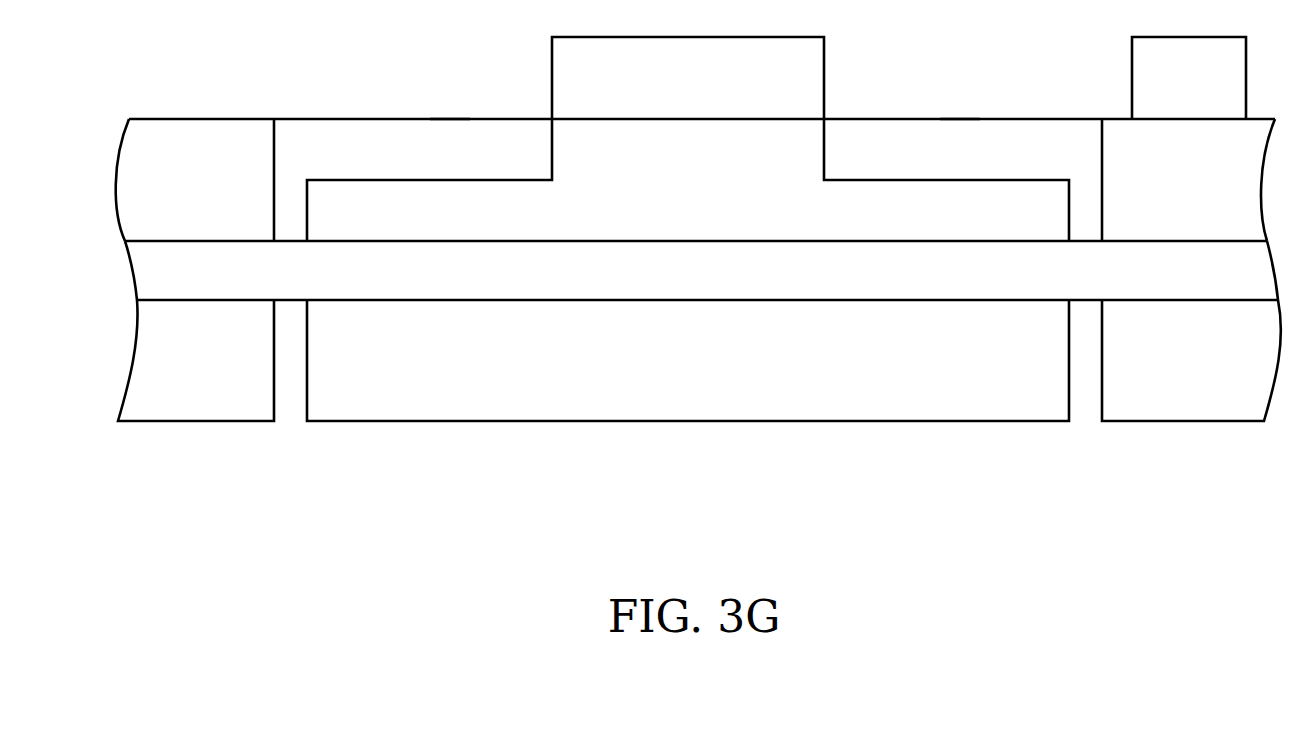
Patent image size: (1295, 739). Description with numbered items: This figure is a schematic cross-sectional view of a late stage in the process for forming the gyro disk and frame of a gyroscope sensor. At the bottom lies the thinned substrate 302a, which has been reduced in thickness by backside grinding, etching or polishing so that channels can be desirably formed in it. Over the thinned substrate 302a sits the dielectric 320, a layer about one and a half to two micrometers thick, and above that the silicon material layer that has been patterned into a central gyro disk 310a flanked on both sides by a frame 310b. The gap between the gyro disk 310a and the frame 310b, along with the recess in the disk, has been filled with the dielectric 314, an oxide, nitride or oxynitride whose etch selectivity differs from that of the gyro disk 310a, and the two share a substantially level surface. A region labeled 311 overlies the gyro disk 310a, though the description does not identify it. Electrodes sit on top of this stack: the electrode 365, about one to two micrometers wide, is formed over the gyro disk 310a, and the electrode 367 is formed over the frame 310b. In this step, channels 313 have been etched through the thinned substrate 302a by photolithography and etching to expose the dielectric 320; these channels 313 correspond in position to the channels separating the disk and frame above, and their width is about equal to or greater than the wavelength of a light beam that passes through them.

The thinned substrate 302a is at (183, 369).
The gyro disk 310a is at (956, 222).
The frame 310b is at (181, 193).
The dielectric layer 311 is at (659, 158).
The channels 313 is at (292, 403).
The dielectric 314 is at (448, 133).
The dielectric 320 is at (659, 281).
The electrode 365 is at (659, 85).
The electrode 367 is at (1174, 85).